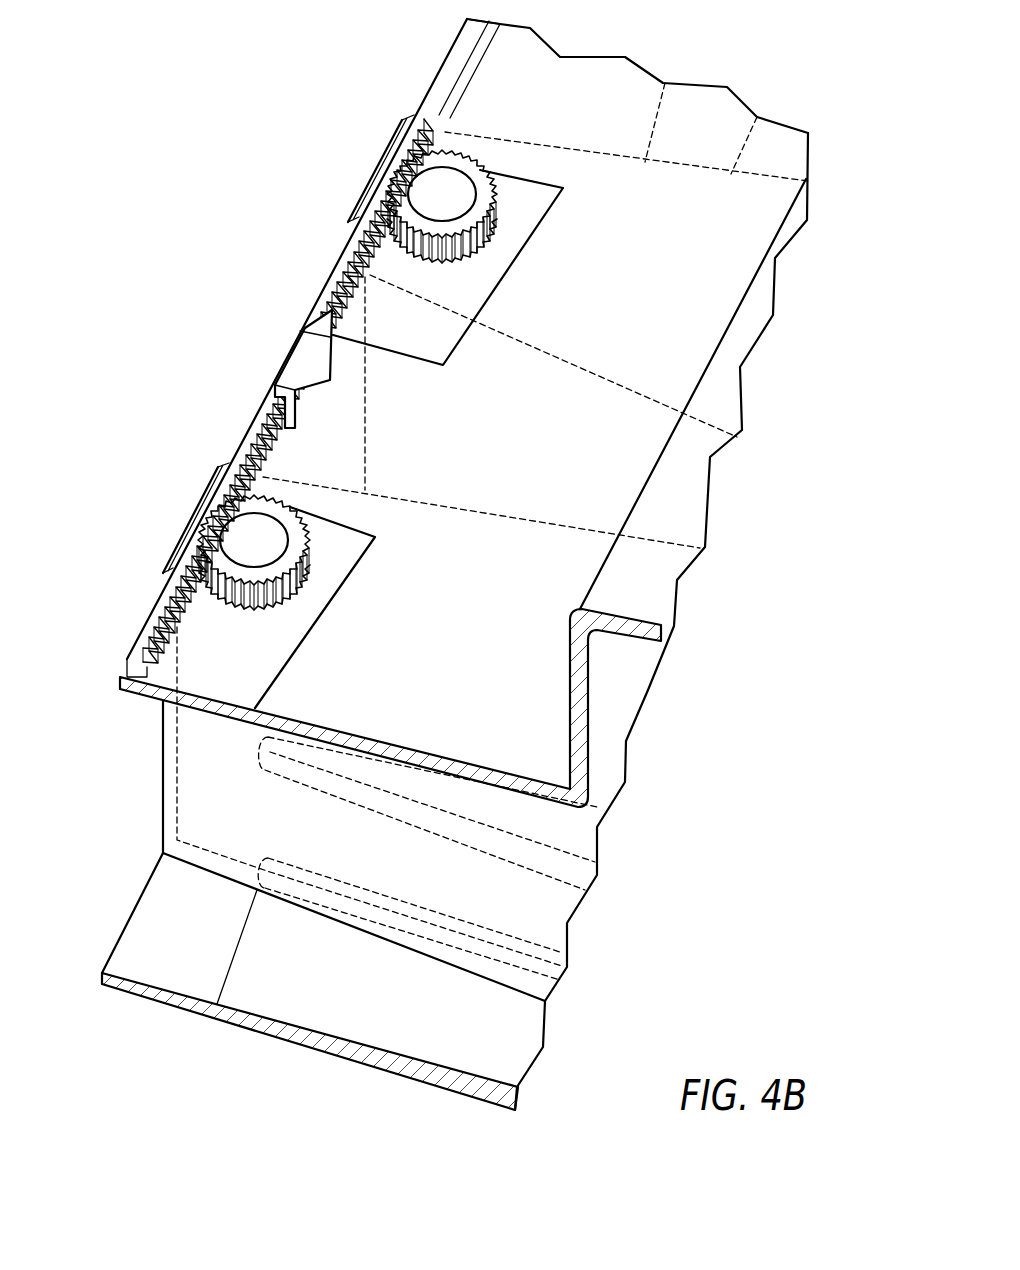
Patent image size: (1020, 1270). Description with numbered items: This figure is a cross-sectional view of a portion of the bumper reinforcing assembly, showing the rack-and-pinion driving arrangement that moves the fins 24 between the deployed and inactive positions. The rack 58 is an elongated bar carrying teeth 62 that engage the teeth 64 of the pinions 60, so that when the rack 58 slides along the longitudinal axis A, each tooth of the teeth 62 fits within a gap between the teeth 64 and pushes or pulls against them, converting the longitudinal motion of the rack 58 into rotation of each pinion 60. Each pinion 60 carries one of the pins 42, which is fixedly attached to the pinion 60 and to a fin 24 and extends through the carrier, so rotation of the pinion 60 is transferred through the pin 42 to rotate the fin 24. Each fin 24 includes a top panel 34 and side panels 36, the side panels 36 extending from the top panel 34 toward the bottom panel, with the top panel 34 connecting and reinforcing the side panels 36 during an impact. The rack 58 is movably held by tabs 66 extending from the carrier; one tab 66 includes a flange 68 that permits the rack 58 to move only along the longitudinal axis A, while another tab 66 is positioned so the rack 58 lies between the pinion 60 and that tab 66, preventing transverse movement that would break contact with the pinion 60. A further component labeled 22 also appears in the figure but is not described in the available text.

The frame 22 is at (120, 678).
The fin 24 is at (677, 83).
The top panel 34 is at (710, 262).
The side panel 36 is at (760, 118).
The pin 42 is at (435, 196).
The rack 58 is at (336, 260).
The pinion 60 is at (316, 555).
The teeth 62 is at (437, 118).
The teeth 64 is at (473, 160).
The tab 66 is at (365, 190).
The flange 68 is at (298, 365).